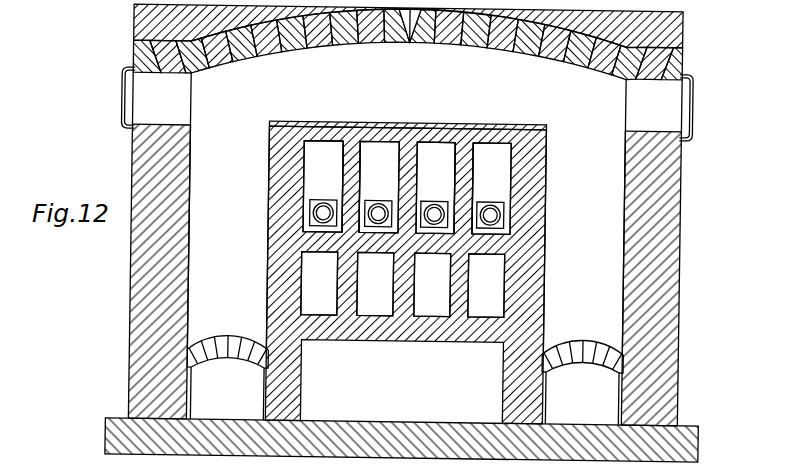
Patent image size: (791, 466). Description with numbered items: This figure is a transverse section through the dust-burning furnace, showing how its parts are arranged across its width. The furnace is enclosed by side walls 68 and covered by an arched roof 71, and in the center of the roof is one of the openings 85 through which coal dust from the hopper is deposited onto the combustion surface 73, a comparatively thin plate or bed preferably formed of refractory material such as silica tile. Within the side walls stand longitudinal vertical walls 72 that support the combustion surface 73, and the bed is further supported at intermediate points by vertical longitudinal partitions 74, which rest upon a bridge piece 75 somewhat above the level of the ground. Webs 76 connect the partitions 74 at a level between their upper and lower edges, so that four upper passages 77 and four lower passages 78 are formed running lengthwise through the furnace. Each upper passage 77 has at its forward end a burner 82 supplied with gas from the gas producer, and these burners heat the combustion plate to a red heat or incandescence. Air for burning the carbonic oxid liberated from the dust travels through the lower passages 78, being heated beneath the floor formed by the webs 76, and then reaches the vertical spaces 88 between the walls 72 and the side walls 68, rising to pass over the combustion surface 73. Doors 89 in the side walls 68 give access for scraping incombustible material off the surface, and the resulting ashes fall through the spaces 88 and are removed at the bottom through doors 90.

The side walls 68 is at (137, 305).
The arched roof 71 is at (441, 46).
The longitudinal vertical walls 72 is at (268, 154).
The combustion surface 73 is at (500, 126).
The vertical longitudinal partitions 74 is at (453, 160).
The bridge piece 75 is at (329, 254).
The webs 76 is at (336, 143).
The upper passages 77 is at (407, 188).
The lower passages 78 is at (431, 284).
The burner 82 is at (310, 216).
The openings 85 is at (404, 36).
The vertical spaces 88 is at (406, 240).
The doors 89 is at (123, 100).
The doors 90 is at (404, 380).